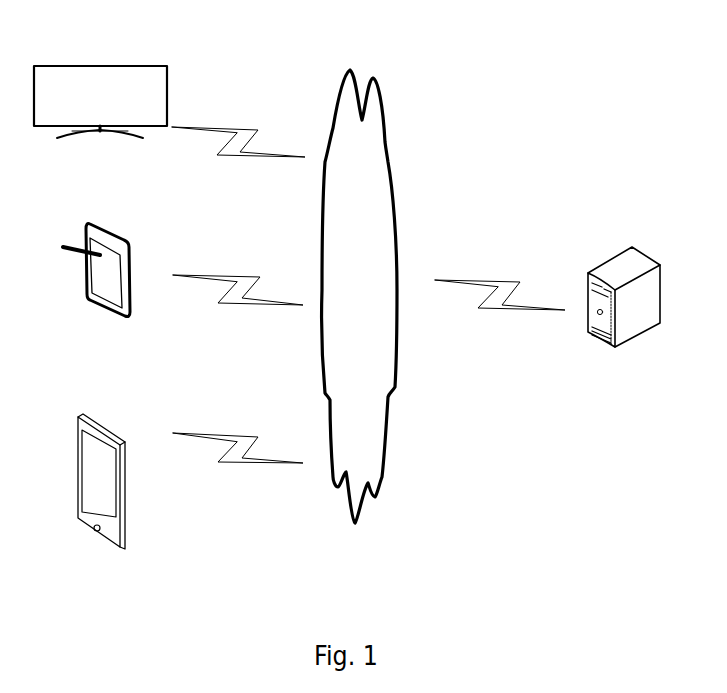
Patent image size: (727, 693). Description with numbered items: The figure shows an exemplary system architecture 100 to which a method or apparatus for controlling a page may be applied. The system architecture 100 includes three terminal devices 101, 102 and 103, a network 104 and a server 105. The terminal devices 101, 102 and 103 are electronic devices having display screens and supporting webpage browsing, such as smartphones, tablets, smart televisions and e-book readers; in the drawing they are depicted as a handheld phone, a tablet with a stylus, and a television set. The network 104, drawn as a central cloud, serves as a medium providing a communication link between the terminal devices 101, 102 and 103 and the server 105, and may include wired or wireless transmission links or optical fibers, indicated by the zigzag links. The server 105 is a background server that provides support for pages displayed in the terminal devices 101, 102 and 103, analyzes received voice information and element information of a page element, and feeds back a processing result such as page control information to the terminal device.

The system architecture 100 is at (607, 46).
The terminal device 101 is at (101, 503).
The terminal device 102 is at (96, 291).
The terminal device 103 is at (100, 122).
The network 104 is at (359, 296).
The server 105 is at (624, 323).